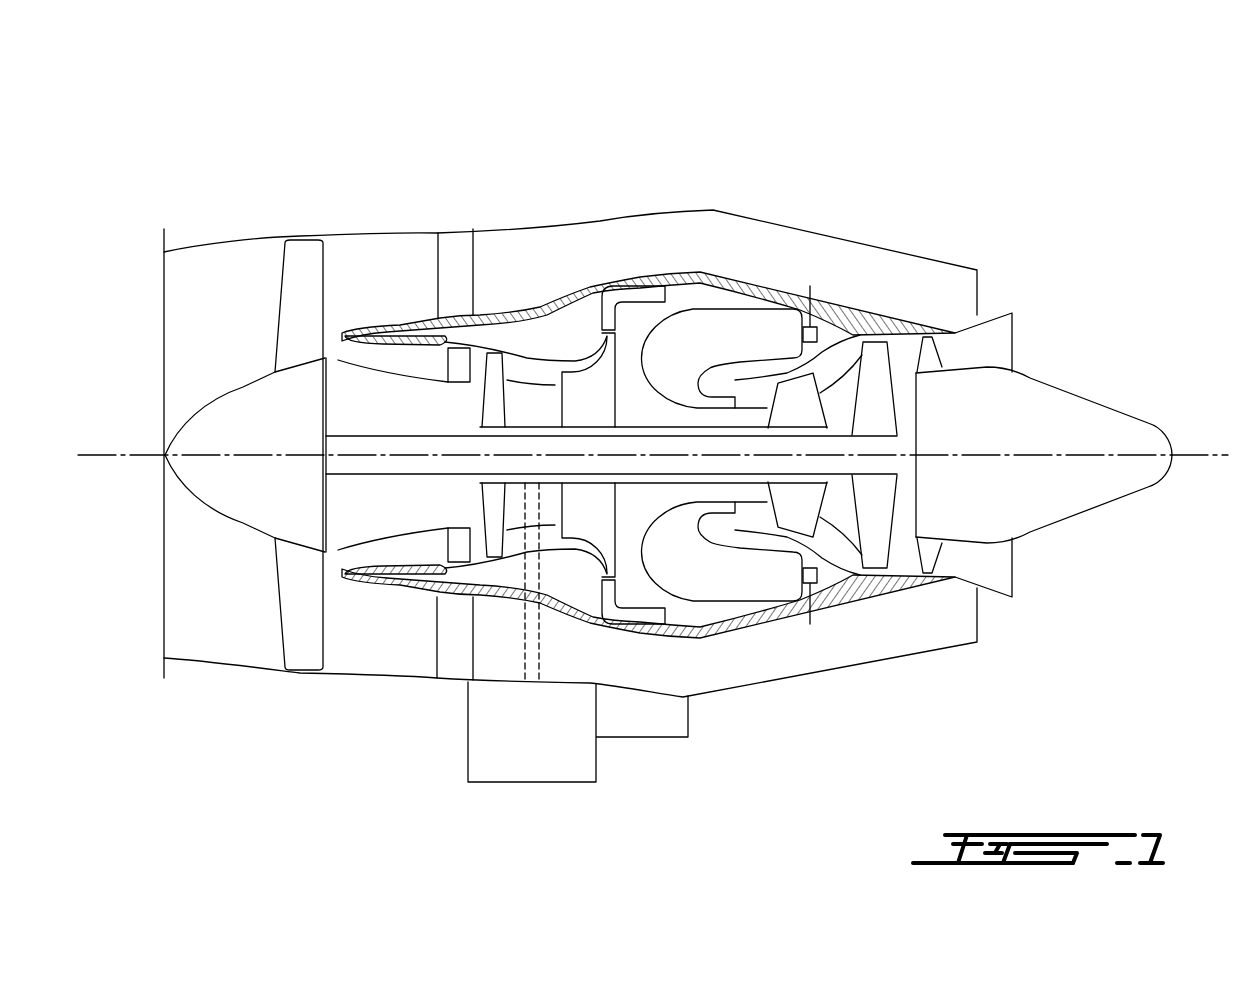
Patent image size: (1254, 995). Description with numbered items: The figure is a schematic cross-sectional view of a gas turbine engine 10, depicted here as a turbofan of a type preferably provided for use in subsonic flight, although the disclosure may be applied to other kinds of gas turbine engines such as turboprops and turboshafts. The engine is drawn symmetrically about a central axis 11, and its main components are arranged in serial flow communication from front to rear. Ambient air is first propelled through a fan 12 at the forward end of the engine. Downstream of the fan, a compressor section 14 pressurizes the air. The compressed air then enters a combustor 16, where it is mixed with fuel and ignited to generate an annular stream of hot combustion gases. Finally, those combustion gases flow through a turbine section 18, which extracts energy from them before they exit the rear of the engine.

The gas turbine engine 10 is at (884, 120).
The central longitudinal axis 11 is at (1203, 452).
The fan 12 is at (297, 592).
The compressor section 14 is at (523, 368).
The combustor 16 is at (713, 337).
The turbine section 18 is at (837, 513).